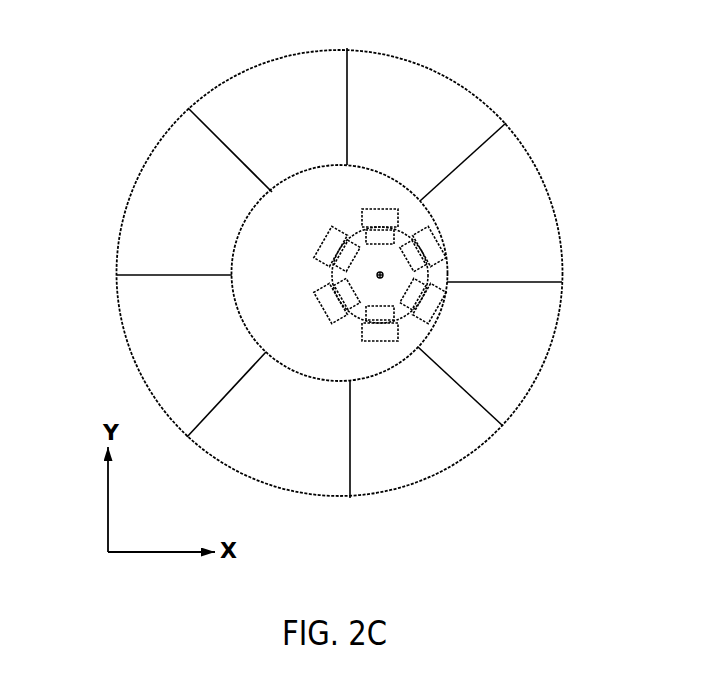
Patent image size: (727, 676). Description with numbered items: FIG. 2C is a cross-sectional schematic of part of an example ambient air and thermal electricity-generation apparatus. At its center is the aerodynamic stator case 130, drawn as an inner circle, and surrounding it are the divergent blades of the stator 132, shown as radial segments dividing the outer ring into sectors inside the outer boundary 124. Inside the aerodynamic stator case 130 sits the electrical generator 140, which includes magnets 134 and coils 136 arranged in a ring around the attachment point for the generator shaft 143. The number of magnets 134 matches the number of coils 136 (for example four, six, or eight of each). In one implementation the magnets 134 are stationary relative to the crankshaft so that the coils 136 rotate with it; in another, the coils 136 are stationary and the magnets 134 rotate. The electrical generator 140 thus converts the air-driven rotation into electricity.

The outer ring 124 is at (483, 105).
The aerodynamic stator case 130 is at (232, 312).
The divergent blades of the stator 132 is at (478, 402).
The magnets 134 is at (387, 232).
The coils 136 is at (338, 313).
The electrical generator 140 is at (322, 320).
The attachment point for the generator shaft 143 is at (382, 283).